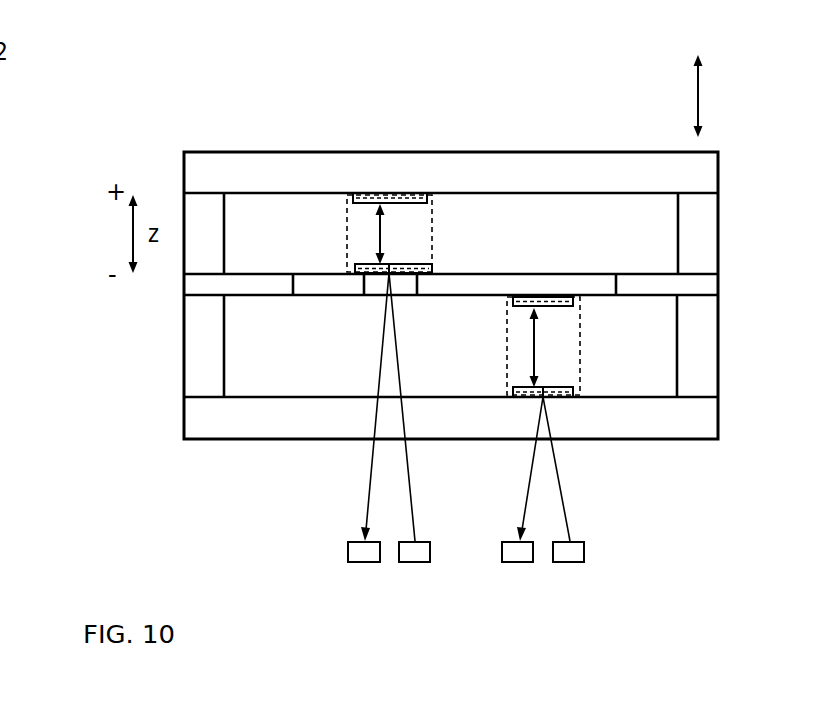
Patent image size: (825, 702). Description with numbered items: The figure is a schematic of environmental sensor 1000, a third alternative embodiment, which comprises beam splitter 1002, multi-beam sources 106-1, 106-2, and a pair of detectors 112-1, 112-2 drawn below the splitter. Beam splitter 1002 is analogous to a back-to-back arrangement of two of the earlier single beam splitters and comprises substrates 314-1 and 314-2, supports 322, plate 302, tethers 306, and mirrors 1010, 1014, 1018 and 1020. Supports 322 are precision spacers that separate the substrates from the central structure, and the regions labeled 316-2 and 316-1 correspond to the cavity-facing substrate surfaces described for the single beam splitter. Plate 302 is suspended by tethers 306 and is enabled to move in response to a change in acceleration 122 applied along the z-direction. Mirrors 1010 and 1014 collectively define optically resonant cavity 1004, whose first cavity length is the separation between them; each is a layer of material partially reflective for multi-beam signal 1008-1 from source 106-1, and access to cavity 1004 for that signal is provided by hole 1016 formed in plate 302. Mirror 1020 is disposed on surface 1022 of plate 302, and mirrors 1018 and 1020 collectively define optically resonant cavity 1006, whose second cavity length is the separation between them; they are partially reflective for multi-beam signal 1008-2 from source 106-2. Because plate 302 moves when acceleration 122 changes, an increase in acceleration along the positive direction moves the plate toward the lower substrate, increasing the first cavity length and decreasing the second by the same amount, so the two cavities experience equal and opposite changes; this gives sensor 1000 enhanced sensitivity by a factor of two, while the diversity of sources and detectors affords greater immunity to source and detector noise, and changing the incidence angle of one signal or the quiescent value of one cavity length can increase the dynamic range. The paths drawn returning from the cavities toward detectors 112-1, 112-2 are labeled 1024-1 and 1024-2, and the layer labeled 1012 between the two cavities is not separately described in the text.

The sensor 1000 is at (200, 78).
The beam splitter 1002 is at (120, 354).
The optically resonant cavity 1004 is at (347, 238).
The optically resonant cavity 1006 is at (507, 349).
The multi-beam signal 1008-1 is at (407, 449).
The multi-beam signal 1008-2 is at (563, 500).
The mirror 1010 is at (420, 263).
The intermediate layer 1012 is at (310, 272).
The mirror 1014 is at (420, 205).
The hole 1016 is at (375, 288).
The mirror 1018 is at (565, 387).
The mirror 1020 is at (565, 307).
The surface 1022 is at (328, 298).
The first reflected light path 1024-1 is at (367, 500).
The second reflected light path 1024-2 is at (537, 449).
The multi-beam source 106-1 is at (411, 555).
The multi-beam source 106-2 is at (564, 555).
The detector 112-1 is at (358, 555).
The detector 112-2 is at (513, 555).
The acceleration 122 is at (721, 96).
The plate 302 is at (485, 285).
The tethers 306 is at (660, 285).
The substrate 314-1 is at (256, 430).
The substrate 314-2 is at (255, 181).
The surface 316-1 is at (327, 396).
The surface 316-2 is at (318, 196).
The supports 322 is at (710, 253).